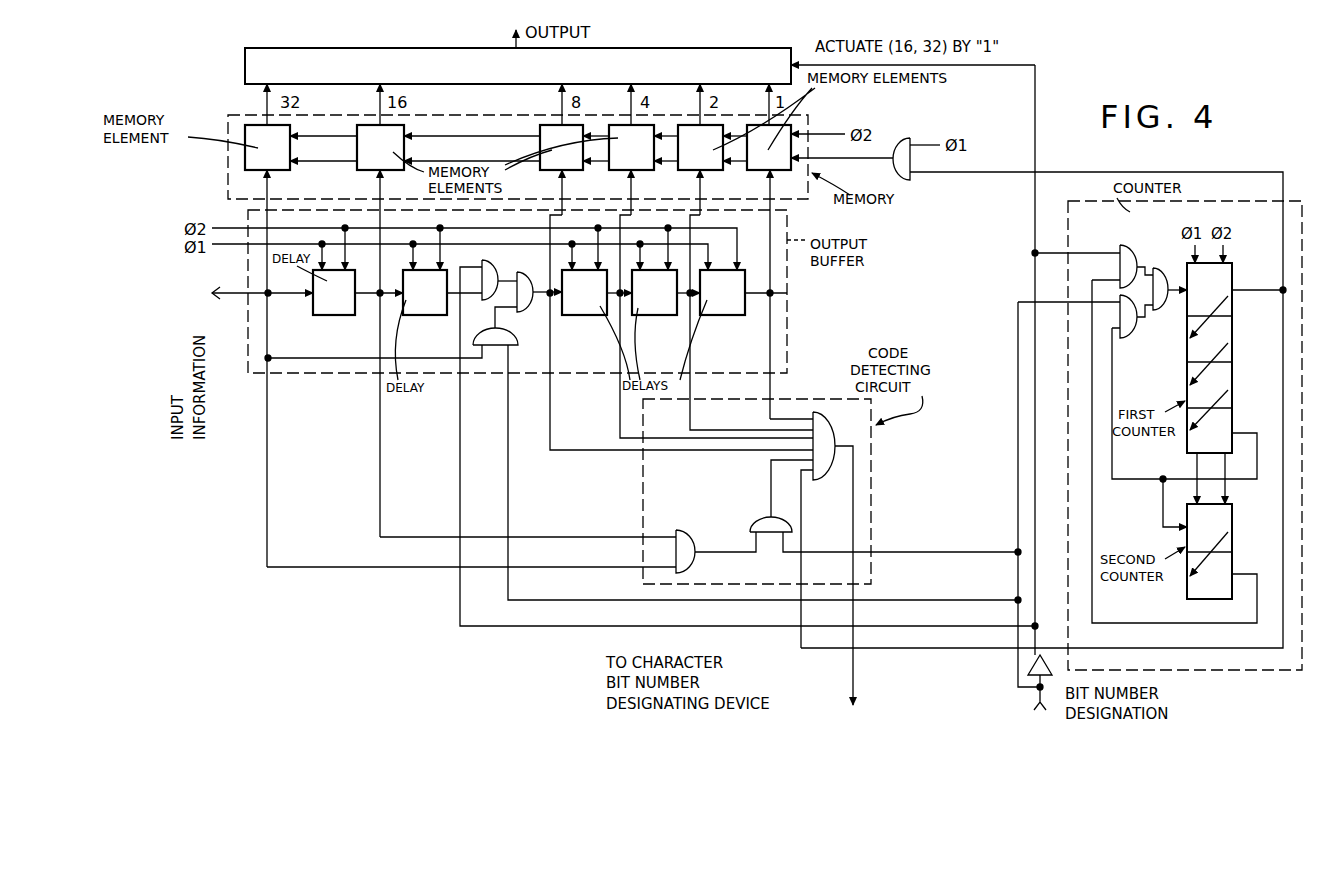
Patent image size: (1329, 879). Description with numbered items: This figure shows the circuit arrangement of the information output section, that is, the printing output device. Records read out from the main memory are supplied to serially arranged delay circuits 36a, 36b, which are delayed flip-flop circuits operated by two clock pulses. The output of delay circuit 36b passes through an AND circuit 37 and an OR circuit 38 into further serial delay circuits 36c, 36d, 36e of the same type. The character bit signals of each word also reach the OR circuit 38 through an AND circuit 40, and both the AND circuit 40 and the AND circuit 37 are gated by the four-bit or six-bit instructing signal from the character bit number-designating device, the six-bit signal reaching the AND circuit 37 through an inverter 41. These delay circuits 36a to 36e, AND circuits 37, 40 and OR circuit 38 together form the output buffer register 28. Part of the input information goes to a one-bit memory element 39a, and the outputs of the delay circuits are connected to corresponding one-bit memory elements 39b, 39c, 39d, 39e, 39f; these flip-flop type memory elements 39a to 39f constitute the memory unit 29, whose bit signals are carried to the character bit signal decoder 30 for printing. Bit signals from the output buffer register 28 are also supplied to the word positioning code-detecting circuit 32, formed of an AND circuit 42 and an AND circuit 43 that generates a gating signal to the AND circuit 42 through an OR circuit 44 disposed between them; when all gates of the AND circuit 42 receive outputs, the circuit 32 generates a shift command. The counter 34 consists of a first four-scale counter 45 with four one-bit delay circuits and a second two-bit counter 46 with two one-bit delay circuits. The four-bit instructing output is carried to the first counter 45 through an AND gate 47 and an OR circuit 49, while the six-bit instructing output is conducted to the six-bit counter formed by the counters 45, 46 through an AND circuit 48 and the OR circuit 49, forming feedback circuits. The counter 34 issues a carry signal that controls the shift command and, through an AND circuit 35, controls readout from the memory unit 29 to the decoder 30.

The character bit signal decoder 30 is at (301, 49).
The memory unit 29 is at (810, 113).
The one-bit memory element 39a is at (286, 173).
The one-bit memory element 39b is at (396, 173).
The one-bit memory element 39c is at (578, 173).
The one-bit memory element 39d is at (647, 173).
The one-bit memory element 39e is at (716, 173).
The one-bit memory element 39f is at (784, 173).
The AND circuit 35 is at (903, 141).
The output buffer register 28 is at (787, 316).
The delay circuit 36a is at (332, 318).
The delay circuit 36b is at (422, 318).
The delay circuit 36c is at (582, 318).
The delay circuit 36d is at (652, 318).
The delay circuit 36e is at (722, 318).
The AND circuit 37 is at (498, 278).
The OR circuit 38 is at (531, 308).
The AND circuit 40 is at (510, 341).
The word positioning code-detecting circuit 32 is at (871, 494).
The AND circuit 42 is at (828, 437).
The AND circuit 43 is at (690, 541).
The OR circuit 44 is at (761, 518).
The counter 34 is at (1298, 279).
The first four-scale counter 45 is at (1232, 366).
The second two-bit counter 46 is at (1232, 548).
The AND gate 47 is at (1130, 341).
The AND circuit 48 is at (1135, 256).
The OR circuit 49 is at (1162, 311).
The inverter 41 is at (1046, 661).